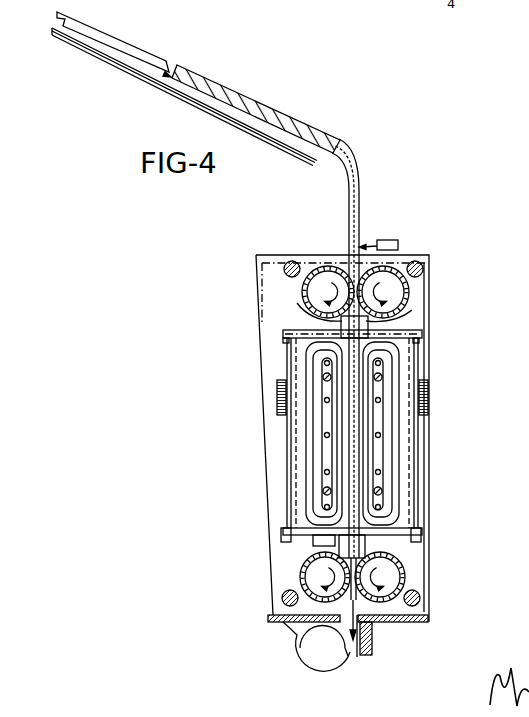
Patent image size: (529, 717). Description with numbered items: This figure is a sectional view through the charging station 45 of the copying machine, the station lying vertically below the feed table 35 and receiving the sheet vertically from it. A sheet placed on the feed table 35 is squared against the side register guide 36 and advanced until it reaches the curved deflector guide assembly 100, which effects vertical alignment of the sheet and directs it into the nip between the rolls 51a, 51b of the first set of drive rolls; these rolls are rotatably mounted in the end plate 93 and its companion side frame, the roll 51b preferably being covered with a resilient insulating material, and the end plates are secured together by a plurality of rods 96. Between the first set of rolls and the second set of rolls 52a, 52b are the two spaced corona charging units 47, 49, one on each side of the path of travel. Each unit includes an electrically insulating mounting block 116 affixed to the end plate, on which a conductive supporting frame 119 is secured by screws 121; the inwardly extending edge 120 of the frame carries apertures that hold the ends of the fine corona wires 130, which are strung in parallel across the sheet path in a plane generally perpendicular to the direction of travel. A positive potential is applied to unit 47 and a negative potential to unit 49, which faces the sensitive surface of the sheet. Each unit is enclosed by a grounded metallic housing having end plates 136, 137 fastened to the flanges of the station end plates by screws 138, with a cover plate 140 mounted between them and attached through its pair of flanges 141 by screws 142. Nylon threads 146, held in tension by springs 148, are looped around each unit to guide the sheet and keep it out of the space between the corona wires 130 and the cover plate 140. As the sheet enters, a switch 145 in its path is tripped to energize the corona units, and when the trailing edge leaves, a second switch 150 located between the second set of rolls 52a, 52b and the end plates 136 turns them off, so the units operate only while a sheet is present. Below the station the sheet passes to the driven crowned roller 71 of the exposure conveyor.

The feed table 35 is at (137, 79).
The side register guide 36 is at (148, 58).
The charging station 45 is at (432, 252).
The corona charging unit 47 is at (306, 430).
The corona charging unit 49 is at (399, 445).
The roll of first set of drive rolls 51a is at (326, 266).
The roll of first set of drive rolls 51b is at (393, 267).
The roll of second set of rolls 52a is at (300, 575).
The roll of second set of rolls 52b is at (406, 578).
The crowned roller 71 is at (321, 649).
The end plate 93 is at (272, 262).
The rods 96 is at (291, 261).
The curved deflector guide assembly 100 is at (361, 172).
The mounting block 116 is at (318, 450).
The conductive supporting frame 119 is at (327, 482).
The inwardly extending edge 120 is at (324, 380).
The screws 121 is at (382, 376).
The corona wires 130 is at (325, 362).
The end plate of corona housing 136 is at (293, 540).
The end plate of corona housing 137 is at (305, 328).
The screws 138 is at (299, 305).
The cover plate 140 is at (292, 492).
The flanges 141 is at (424, 534).
The screws 142 is at (290, 333).
The switch 145 is at (388, 240).
The nylon threads 146 is at (286, 362).
The springs 148 is at (277, 398).
The second switch 150 is at (316, 534).